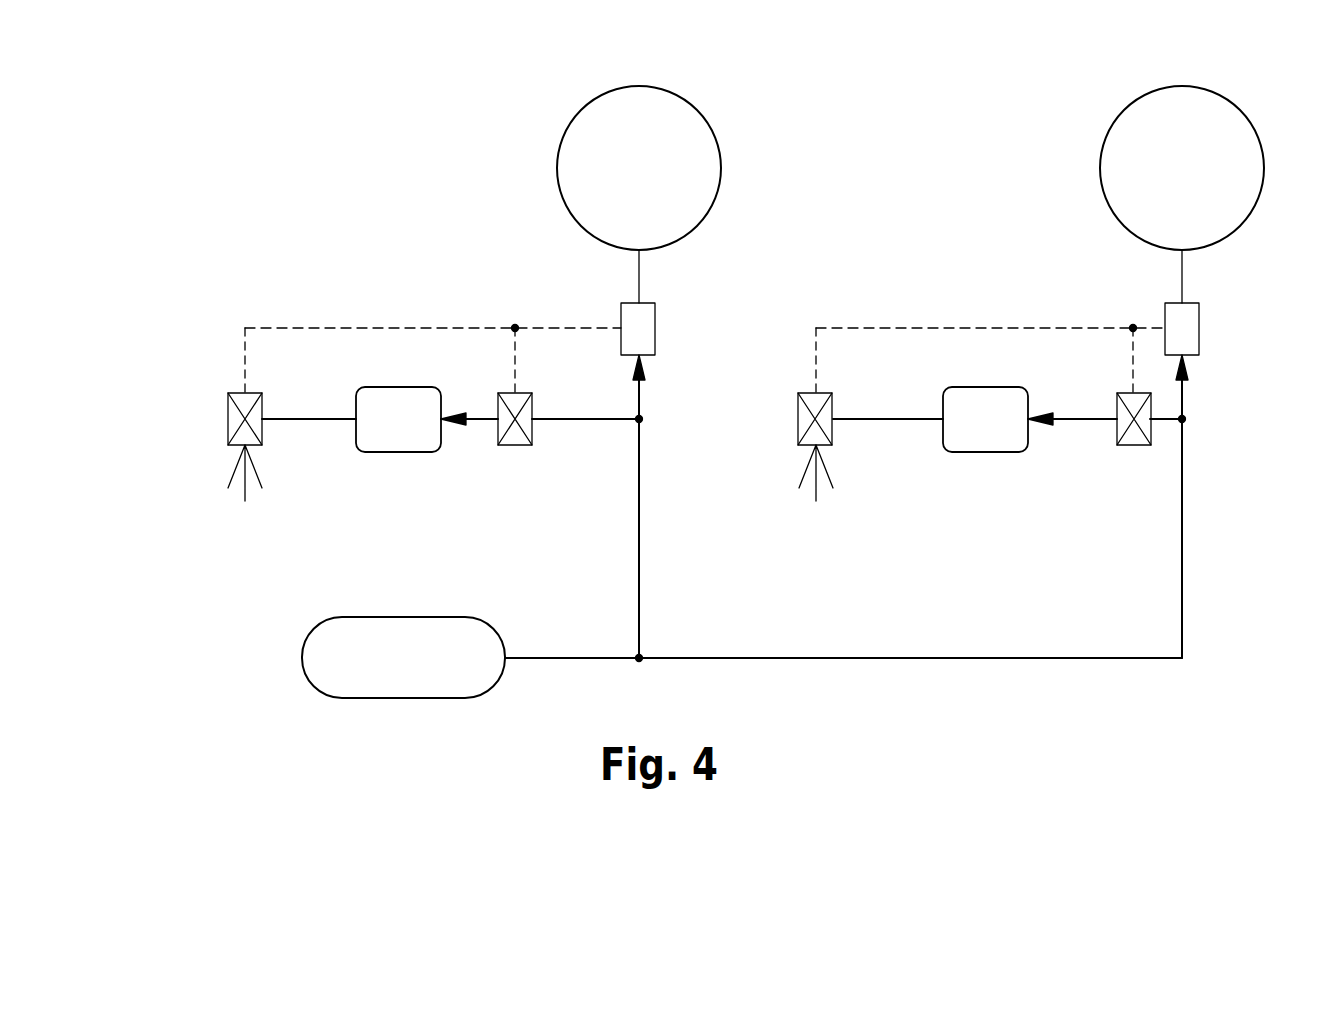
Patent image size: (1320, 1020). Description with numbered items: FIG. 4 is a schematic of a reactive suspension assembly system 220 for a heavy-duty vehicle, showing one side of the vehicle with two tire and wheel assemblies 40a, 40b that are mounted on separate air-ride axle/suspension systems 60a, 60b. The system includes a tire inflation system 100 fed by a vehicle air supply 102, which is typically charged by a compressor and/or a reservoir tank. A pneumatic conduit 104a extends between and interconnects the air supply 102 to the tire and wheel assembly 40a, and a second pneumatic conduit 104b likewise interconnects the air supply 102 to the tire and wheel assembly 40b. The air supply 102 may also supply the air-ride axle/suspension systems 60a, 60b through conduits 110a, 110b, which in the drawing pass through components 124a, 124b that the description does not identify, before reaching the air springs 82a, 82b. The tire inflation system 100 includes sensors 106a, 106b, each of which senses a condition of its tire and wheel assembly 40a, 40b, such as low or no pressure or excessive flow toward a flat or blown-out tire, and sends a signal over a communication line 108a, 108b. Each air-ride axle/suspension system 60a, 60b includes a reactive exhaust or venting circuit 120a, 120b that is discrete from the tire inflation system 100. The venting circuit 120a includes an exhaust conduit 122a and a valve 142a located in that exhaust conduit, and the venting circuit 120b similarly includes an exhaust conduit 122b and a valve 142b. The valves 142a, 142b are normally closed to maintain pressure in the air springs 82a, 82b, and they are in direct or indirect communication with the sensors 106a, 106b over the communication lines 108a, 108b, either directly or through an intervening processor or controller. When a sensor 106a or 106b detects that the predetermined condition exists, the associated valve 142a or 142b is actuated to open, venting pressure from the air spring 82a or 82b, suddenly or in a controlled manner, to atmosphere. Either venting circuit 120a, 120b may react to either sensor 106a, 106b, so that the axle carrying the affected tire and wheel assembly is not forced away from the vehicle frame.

The reactive suspension assembly system 220 is at (230, 187).
The tire inflation system 100 is at (1057, 685).
The vehicle air supply 102 is at (492, 622).
The pneumatic conduit 104a is at (640, 560).
The pneumatic conduit 104b is at (1183, 554).
The tire and wheel assembly 40a is at (557, 151).
The tire and wheel assembly 40b is at (1100, 151).
The sensor 106a is at (655, 323).
The sensor 106b is at (1199, 323).
The communication line 108a is at (353, 328).
The communication line 108b is at (900, 328).
The conduit 110a is at (592, 418).
The conduit 110b is at (1086, 418).
The first supply valve 124a is at (520, 446).
The second supply valve 124b is at (1133, 446).
The air spring 82a is at (441, 437).
The air spring 82b is at (1028, 437).
The air-ride axle/suspension system 60a is at (345, 428).
The air-ride axle/suspension system 60b is at (932, 432).
The exhaust conduit 122a is at (298, 418).
The exhaust conduit 122b is at (853, 421).
The valve 142a is at (228, 404).
The valve 142b is at (833, 405).
The venting circuit 120a is at (231, 382).
The venting circuit 120b is at (806, 388).